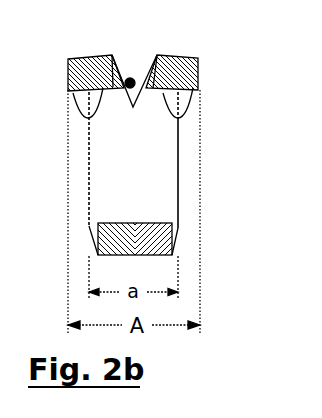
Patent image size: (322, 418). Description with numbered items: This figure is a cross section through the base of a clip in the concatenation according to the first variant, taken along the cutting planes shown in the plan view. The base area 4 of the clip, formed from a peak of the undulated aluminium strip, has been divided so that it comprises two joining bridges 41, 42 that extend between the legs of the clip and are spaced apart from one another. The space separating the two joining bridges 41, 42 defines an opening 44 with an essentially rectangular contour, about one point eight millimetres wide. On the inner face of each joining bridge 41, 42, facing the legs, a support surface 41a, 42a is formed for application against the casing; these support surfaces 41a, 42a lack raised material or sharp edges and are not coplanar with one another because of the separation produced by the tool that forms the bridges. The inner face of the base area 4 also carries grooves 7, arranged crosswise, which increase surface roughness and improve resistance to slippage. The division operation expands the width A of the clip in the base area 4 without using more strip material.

The base area 4 is at (69, 72).
The joining bridge 41 is at (82, 67).
The joining bridge 42 is at (178, 62).
The opening 44 is at (130, 78).
The support surface 41a is at (89, 117).
The support surface 42a is at (179, 117).
The groove 7 is at (100, 114).